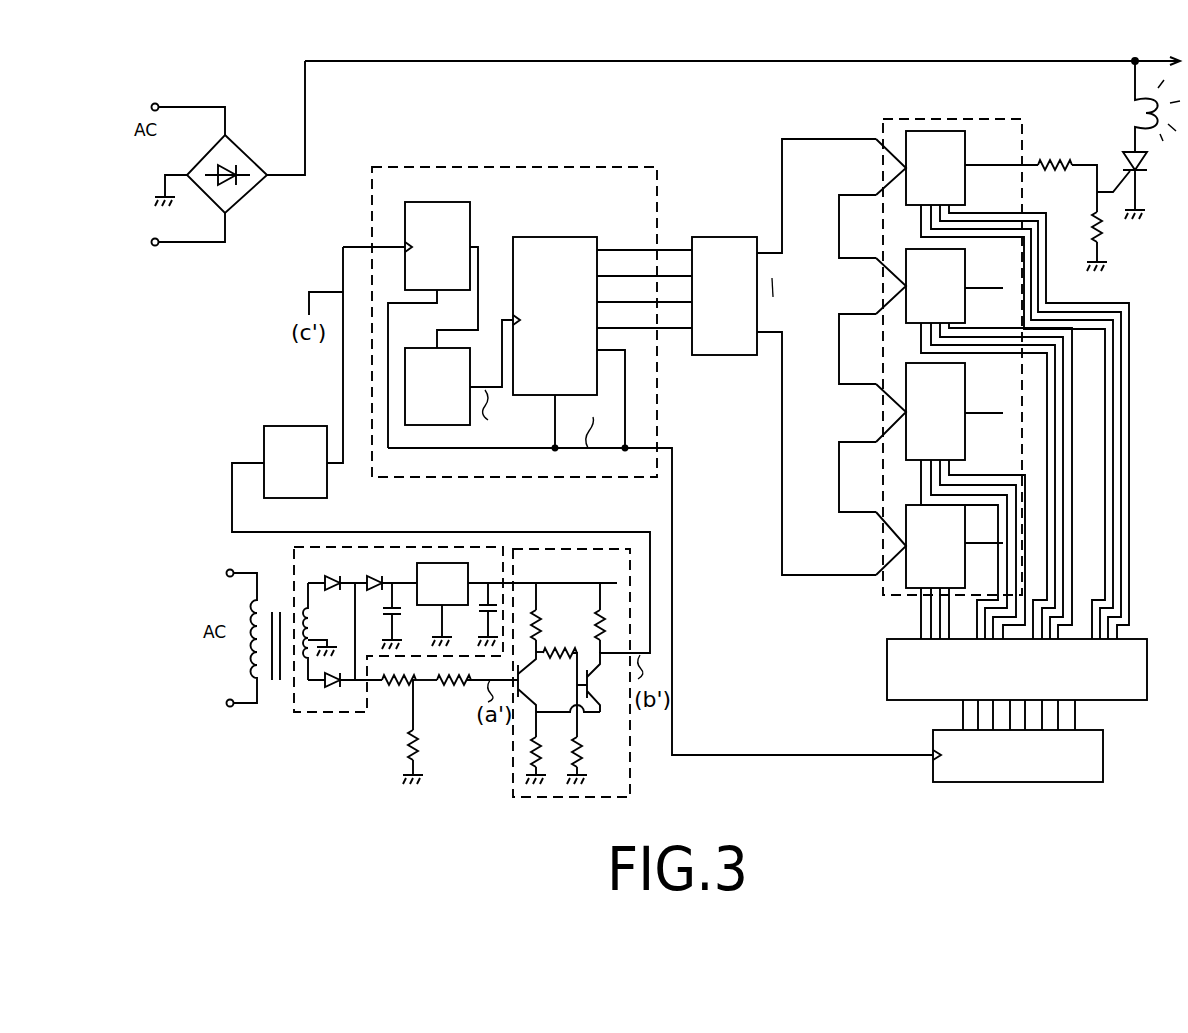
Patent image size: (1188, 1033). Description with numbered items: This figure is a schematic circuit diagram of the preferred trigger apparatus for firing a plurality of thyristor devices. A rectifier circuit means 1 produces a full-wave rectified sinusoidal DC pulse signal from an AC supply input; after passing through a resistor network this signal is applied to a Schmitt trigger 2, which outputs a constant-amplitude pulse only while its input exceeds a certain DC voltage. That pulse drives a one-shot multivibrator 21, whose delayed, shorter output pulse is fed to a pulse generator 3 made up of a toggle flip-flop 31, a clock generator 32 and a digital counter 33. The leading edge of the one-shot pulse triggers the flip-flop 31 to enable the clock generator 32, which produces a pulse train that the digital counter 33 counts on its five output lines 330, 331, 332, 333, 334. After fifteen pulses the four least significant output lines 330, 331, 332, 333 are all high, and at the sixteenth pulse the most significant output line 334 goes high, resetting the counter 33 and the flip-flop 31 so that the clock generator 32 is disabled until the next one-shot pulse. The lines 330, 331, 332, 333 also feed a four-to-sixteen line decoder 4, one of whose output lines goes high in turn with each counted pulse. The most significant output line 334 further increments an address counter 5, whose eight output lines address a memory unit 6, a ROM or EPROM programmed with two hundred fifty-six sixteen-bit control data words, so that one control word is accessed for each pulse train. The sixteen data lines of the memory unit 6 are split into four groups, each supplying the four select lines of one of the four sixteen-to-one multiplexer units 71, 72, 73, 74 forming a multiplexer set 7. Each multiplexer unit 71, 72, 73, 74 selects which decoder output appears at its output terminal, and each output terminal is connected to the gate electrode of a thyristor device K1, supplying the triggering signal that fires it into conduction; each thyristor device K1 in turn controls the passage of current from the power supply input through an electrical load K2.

The rectifier circuit means 1 is at (420, 547).
The Schmitt trigger 2 is at (562, 549).
The pulse generator 3 is at (486, 166).
The decoder 4 is at (725, 236).
The address counter 5 is at (1103, 755).
The memory unit 6 is at (887, 677).
The multiplexer set 7 is at (1025, 119).
The one-shot multivibrator 21 is at (295, 425).
The toggle flip-flop 31 is at (458, 204).
The clock generator 32 is at (463, 356).
The digital counter 33 is at (566, 222).
The 16-to-1 multiplexer unit 71 is at (936, 130).
The 16-to-1 multiplexer unit 72 is at (912, 247).
The 16-to-1 multiplexer unit 73 is at (910, 362).
The 16-to-1 multiplexer unit 74 is at (912, 505).
The output line 330 is at (644, 241).
The output line 331 is at (644, 267).
The output line 332 is at (644, 293).
The output line 333 is at (644, 319).
The most significant output line 334 is at (617, 389).
The thyristor device K1 is at (1124, 156).
The electrical load K2 is at (1130, 118).